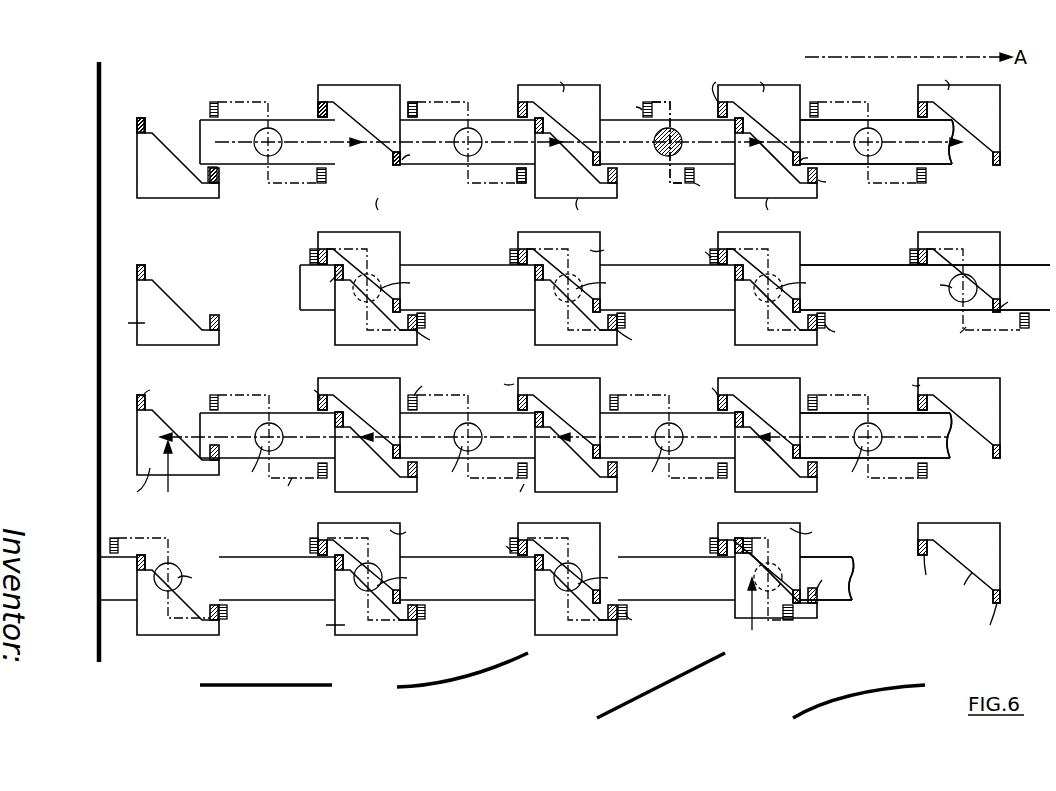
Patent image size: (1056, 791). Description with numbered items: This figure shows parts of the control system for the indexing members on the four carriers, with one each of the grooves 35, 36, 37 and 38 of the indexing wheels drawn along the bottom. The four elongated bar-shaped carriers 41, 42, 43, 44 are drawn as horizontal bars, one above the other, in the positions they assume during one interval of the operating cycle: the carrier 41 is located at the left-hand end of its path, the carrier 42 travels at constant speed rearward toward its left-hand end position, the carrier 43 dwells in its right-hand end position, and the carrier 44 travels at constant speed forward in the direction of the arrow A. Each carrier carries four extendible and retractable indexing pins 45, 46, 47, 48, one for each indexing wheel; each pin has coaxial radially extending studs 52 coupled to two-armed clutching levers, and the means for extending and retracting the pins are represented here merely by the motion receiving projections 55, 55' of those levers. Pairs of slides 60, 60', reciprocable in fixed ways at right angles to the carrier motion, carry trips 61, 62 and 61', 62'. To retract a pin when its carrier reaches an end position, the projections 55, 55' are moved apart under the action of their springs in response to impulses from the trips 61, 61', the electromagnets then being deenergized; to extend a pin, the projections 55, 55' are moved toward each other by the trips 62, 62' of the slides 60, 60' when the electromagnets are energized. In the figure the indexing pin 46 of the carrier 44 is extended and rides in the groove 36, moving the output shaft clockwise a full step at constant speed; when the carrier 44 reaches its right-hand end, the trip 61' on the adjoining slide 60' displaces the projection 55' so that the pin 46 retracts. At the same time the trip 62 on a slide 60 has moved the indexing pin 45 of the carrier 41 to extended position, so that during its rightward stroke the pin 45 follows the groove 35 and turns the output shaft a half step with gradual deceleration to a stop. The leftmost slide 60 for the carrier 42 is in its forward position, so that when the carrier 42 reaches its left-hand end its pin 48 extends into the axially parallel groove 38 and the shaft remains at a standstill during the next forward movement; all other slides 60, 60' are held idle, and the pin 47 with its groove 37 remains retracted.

The groove 35 is at (792, 706).
The groove 36 is at (617, 714).
The groove 37 is at (404, 690).
The groove 38 is at (205, 688).
The carrier 41 is at (843, 560).
The carrier 42 is at (945, 464).
The carrier 43 is at (1040, 274).
The carrier 44 is at (943, 166).
The indexing pin 45 is at (870, 130).
The indexing pin 46 is at (654, 144).
The indexing pin 47 is at (462, 154).
The indexing pin 48 is at (254, 144).
The stud 52 is at (670, 120).
The motion receiving projection 55 is at (515, 186).
The motion receiving projection 55' is at (420, 94).
The slide 60 is at (178, 169).
The slide 60' is at (359, 113).
The trip 61 is at (228, 179).
The trip 61' is at (307, 105).
The trip 62 is at (154, 113).
The trip 62' is at (416, 151).